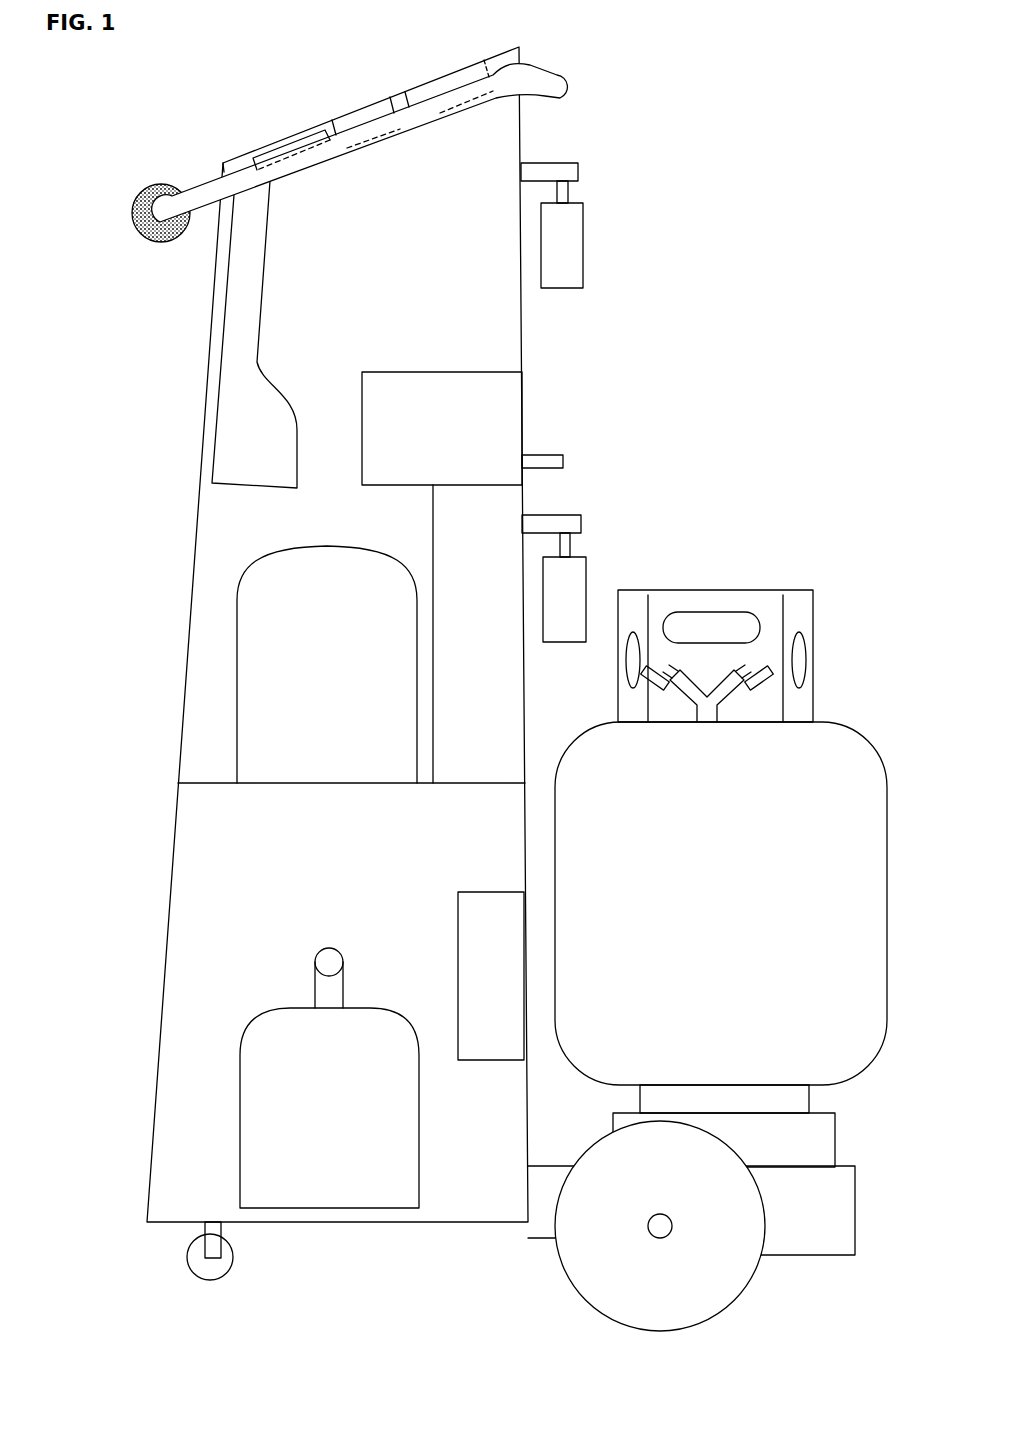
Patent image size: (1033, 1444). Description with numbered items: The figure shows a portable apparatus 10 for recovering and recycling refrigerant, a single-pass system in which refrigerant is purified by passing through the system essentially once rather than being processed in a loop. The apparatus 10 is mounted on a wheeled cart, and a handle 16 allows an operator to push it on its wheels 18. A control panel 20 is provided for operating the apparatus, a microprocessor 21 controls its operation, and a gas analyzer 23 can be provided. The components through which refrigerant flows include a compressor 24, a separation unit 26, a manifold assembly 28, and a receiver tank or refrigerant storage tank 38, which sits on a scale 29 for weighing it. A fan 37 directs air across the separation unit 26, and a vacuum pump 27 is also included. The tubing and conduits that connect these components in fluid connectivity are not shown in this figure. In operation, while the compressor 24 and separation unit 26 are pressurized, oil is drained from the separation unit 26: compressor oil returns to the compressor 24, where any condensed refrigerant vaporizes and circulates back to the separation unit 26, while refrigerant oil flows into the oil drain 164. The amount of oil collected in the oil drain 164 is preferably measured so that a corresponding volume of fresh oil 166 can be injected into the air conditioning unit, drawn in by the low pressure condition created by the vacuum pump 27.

The portable apparatus 10 is at (637, 97).
The handle 16 is at (138, 203).
The wheels 18 is at (598, 1290).
The control panel 20 is at (332, 121).
The microprocessor 21 is at (260, 160).
The gas analyzer 23 is at (267, 442).
The compressor 24 is at (308, 685).
The separation unit 26 is at (471, 637).
The vacuum pump 27 is at (326, 1130).
The manifold assembly 28 is at (432, 430).
The scale 29 is at (802, 1142).
The fan 37 is at (483, 965).
The refrigerant storage tank 38 is at (696, 912).
The oil drain 164 is at (566, 586).
The fresh oil 166 is at (566, 250).